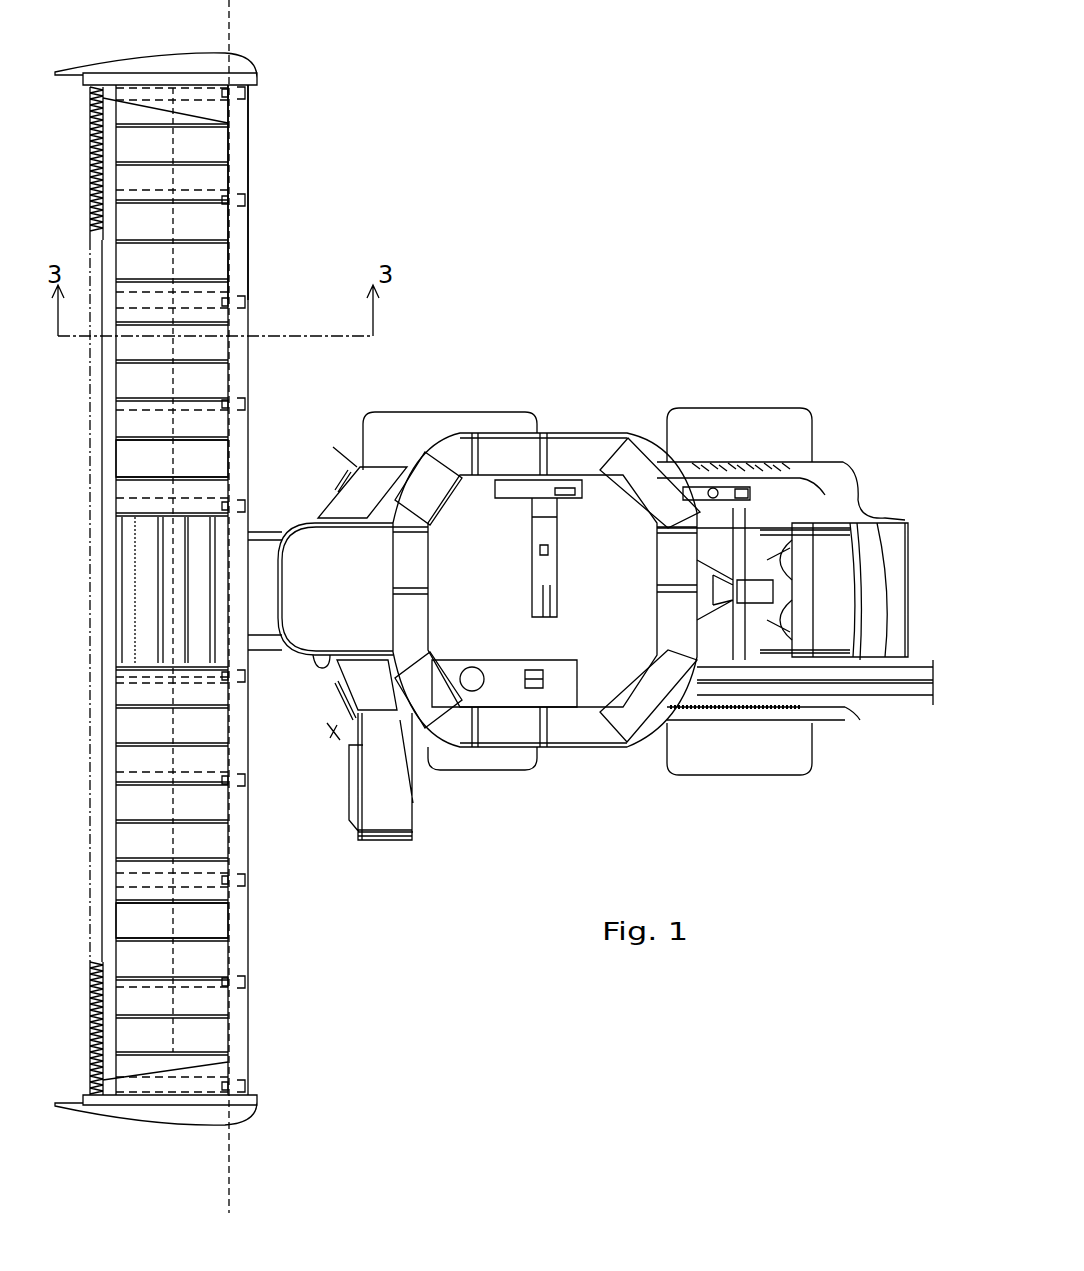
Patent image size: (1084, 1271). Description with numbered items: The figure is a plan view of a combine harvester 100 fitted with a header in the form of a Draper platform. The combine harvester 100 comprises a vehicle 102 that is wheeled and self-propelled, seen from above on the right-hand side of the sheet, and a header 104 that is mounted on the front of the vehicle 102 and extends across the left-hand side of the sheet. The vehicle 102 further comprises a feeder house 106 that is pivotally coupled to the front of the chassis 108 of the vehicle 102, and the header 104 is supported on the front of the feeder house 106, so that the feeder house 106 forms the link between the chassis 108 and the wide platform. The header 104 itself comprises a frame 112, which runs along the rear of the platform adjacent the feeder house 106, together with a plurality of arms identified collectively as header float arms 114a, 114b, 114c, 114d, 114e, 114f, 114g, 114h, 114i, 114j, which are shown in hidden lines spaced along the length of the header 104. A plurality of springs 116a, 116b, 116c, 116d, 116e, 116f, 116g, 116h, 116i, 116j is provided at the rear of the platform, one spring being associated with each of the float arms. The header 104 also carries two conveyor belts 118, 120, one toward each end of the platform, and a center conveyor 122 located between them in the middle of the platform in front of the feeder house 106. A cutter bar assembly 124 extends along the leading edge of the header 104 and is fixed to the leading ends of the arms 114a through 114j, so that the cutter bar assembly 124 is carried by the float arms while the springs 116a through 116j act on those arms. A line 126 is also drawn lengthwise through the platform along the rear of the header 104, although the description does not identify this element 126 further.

The combine harvester 100 is at (624, 348).
The vehicle 102 is at (588, 770).
The header 104 is at (247, 940).
The feeder house 106 is at (265, 588).
The chassis 108 is at (328, 653).
The frame 112 is at (248, 153).
The header float arm 114a is at (198, 1077).
The header float arm 114b is at (205, 987).
The header float arm 114c is at (210, 884).
The header float arm 114d is at (215, 770).
The header float arm 114e is at (212, 680).
The header float arm 114f is at (225, 493).
The header float arm 114g is at (225, 405).
The header float arm 114h is at (225, 298).
The header float arm 114i is at (225, 180).
The header float arm 114j is at (225, 96).
The spring 116a is at (248, 1086).
The spring 116b is at (248, 982).
The spring 116c is at (248, 877).
The spring 116d is at (238, 792).
The spring 116e is at (248, 678).
The spring 116f is at (248, 508).
The spring 116g is at (244, 412).
The spring 116h is at (248, 302).
The spring 116i is at (248, 200).
The spring 116j is at (248, 95).
The conveyor belt 118 is at (133, 928).
The conveyor belt 120 is at (120, 457).
The center conveyor 122 is at (128, 590).
The cutter bar assembly 124 is at (102, 100).
The centerline 126 is at (229, 23).